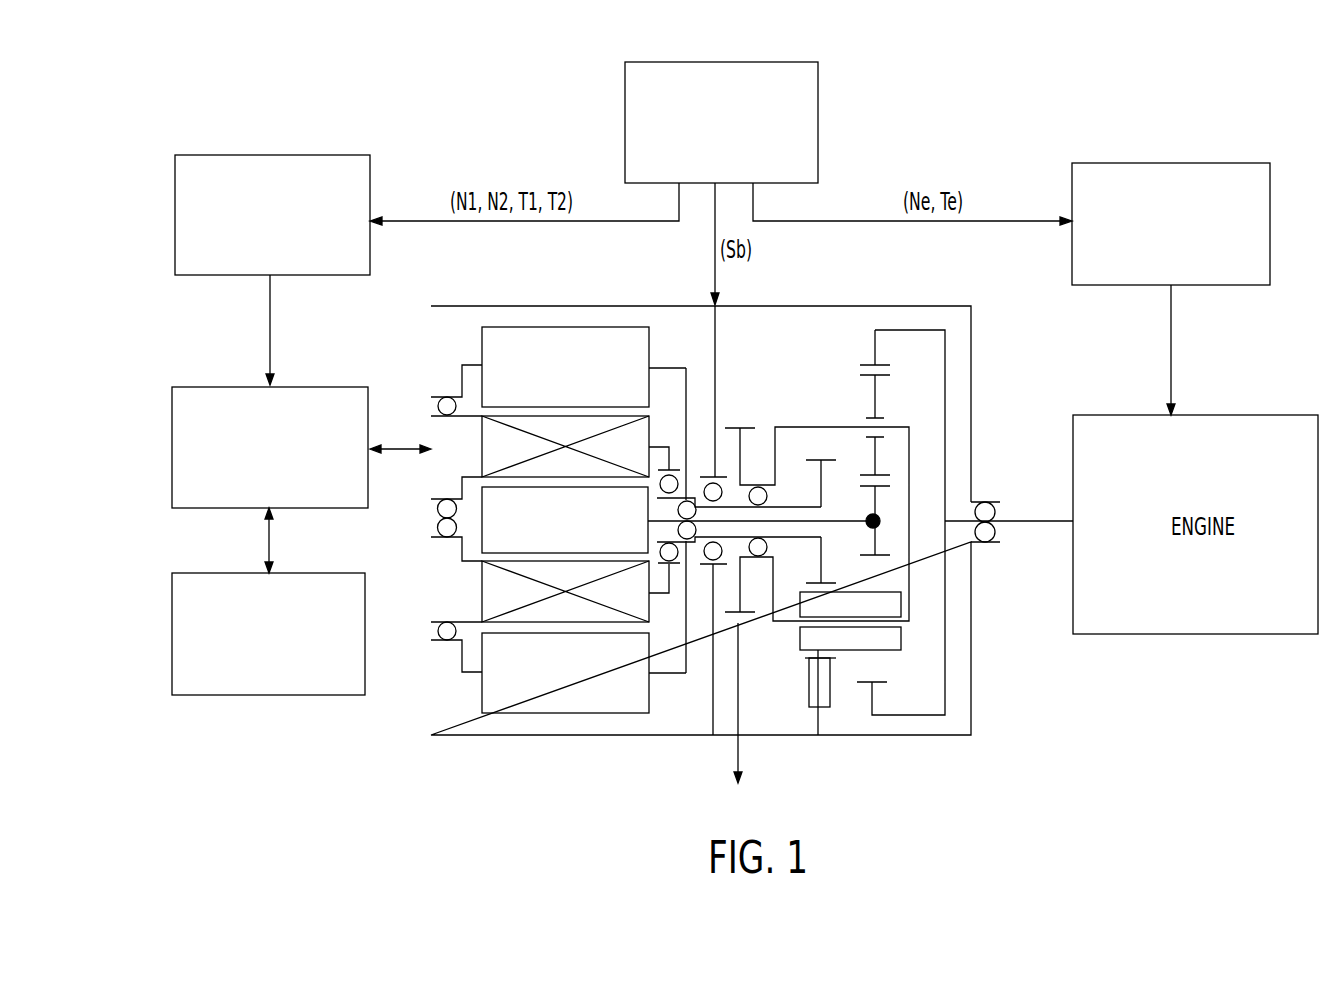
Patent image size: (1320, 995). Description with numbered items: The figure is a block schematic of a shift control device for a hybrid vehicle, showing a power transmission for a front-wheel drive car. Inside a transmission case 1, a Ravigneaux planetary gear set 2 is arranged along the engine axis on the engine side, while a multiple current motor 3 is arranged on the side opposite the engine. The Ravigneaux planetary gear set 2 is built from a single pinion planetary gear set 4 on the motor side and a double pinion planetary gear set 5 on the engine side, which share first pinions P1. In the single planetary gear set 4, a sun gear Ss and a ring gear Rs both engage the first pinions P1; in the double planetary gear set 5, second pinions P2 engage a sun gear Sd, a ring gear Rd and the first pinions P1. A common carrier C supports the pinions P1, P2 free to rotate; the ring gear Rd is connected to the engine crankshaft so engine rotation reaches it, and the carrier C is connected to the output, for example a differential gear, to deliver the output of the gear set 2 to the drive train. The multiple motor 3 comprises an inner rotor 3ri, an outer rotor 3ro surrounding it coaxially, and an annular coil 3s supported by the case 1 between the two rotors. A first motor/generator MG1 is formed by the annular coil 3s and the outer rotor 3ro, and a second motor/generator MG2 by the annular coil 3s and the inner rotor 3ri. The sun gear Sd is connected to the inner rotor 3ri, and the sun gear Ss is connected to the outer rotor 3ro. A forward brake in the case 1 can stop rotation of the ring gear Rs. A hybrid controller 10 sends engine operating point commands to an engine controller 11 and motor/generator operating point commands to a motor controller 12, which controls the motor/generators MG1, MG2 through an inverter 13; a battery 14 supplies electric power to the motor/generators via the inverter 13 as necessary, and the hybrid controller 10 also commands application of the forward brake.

The transmission case 1 is at (533, 736).
The Ravigneaux planetary gear set 2 is at (861, 685).
The multiple current motor 3 is at (631, 559).
The annular coil 3s is at (482, 445).
The inner rotor 3ri is at (462, 542).
The outer rotor 3ro is at (558, 371).
The first motor/generator MG1 is at (478, 699).
The second motor/generator MG2 is at (534, 466).
The single pinion planetary gear set 4 is at (817, 484).
The double pinion planetary gear set 5 is at (881, 522).
The hybrid controller 10 is at (668, 61).
The engine controller 11 is at (1110, 163).
The motor controller 12 is at (215, 155).
The inverter 13 is at (213, 386).
The battery 14 is at (212, 573).
The ring gear Rd is at (868, 365).
The second pinions P2 is at (868, 376).
The sun gear Ss is at (815, 457).
The sun gear Sd is at (883, 560).
The common carrier C is at (905, 610).
The ring gear Rs is at (808, 660).
The first pinions P1 is at (888, 652).